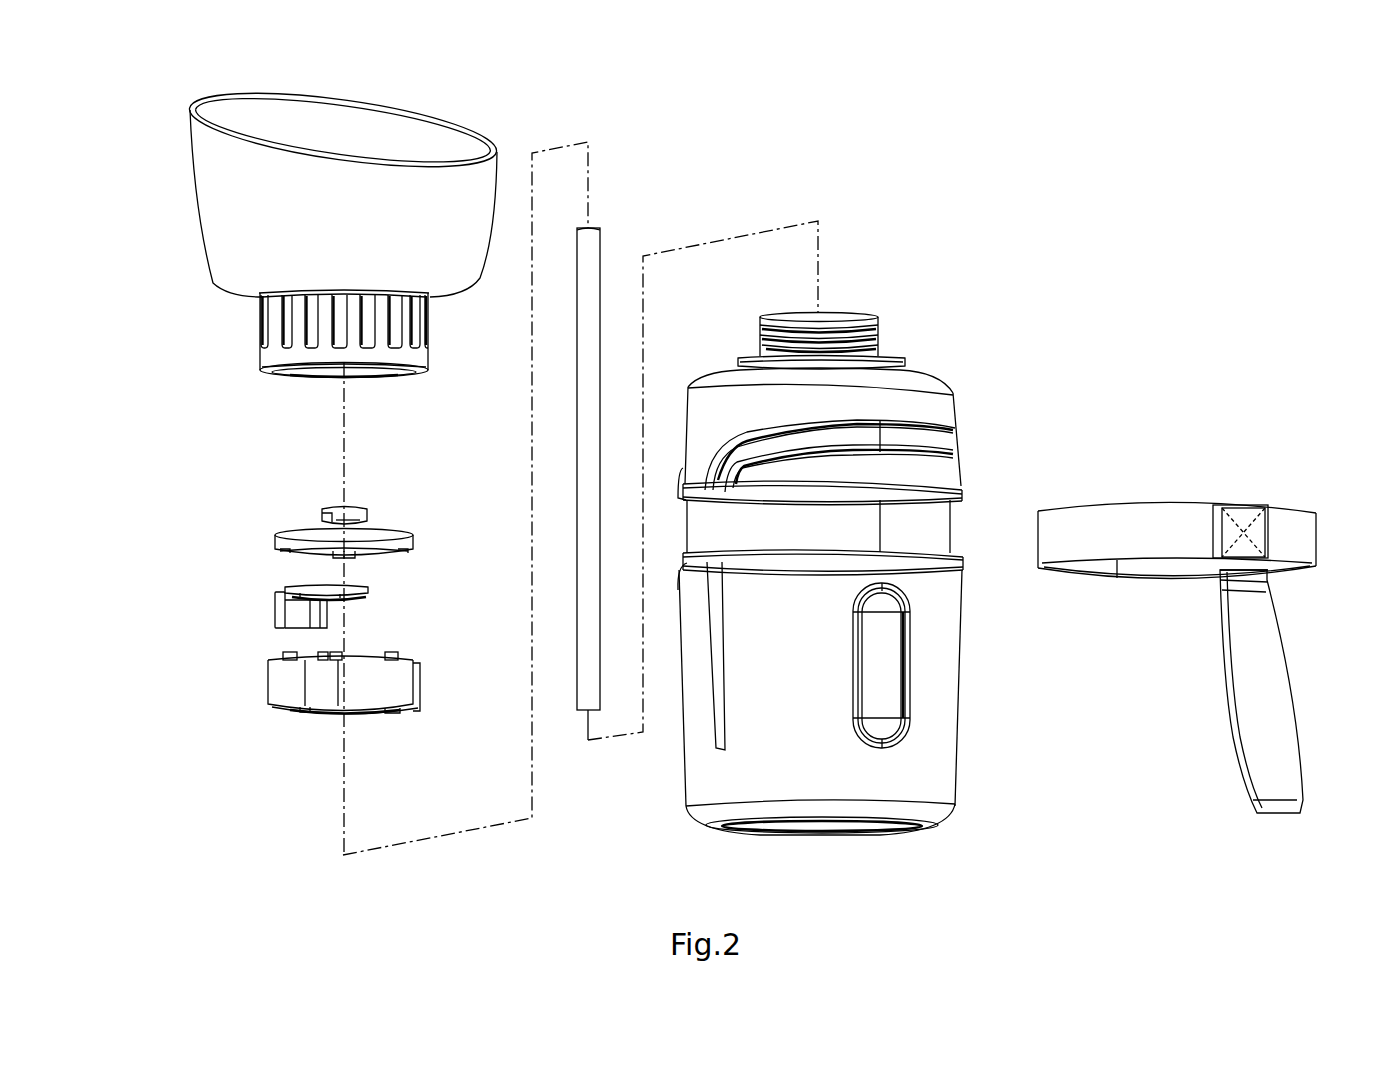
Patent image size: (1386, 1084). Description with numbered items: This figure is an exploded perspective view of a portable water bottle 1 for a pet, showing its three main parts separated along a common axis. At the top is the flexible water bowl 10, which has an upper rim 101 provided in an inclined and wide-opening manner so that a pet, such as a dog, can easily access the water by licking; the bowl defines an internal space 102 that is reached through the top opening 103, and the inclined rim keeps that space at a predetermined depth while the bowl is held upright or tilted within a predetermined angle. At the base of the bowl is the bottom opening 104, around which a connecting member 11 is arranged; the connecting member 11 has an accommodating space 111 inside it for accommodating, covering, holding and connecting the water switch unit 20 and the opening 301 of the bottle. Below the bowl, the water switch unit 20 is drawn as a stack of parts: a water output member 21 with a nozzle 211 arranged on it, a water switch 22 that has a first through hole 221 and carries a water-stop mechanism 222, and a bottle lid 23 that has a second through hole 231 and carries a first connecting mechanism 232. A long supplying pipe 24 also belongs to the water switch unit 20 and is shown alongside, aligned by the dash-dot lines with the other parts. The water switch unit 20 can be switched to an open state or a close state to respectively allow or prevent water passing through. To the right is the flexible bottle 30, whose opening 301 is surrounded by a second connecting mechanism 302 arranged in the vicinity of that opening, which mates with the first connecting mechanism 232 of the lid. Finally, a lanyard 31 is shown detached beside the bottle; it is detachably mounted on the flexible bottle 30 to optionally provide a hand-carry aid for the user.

The portable water bottle 1 is at (723, 162).
The flexible water bowl 10 is at (309, 239).
The upper rim 101 is at (241, 99).
The internal space 102 is at (358, 147).
The top opening 103 is at (319, 112).
The bottom opening 104 is at (290, 375).
The connecting member 11 is at (295, 363).
The accommodating space 111 is at (312, 373).
The water switch unit 20 is at (227, 557).
The water output member 21 is at (332, 517).
The nozzle 211 is at (369, 503).
The water switch 22 is at (323, 591).
The first through hole 221 is at (359, 602).
The water-stop mechanism 222 is at (341, 582).
The bottle lid 23 is at (347, 711).
The second through hole 231 is at (327, 714).
The first connecting mechanism 232 is at (407, 710).
The supplying pipe 24 is at (582, 338).
The flexible bottle 30 is at (851, 542).
The opening 301 is at (849, 310).
The second connecting mechanism 302 is at (884, 328).
The lanyard 31 is at (1300, 523).